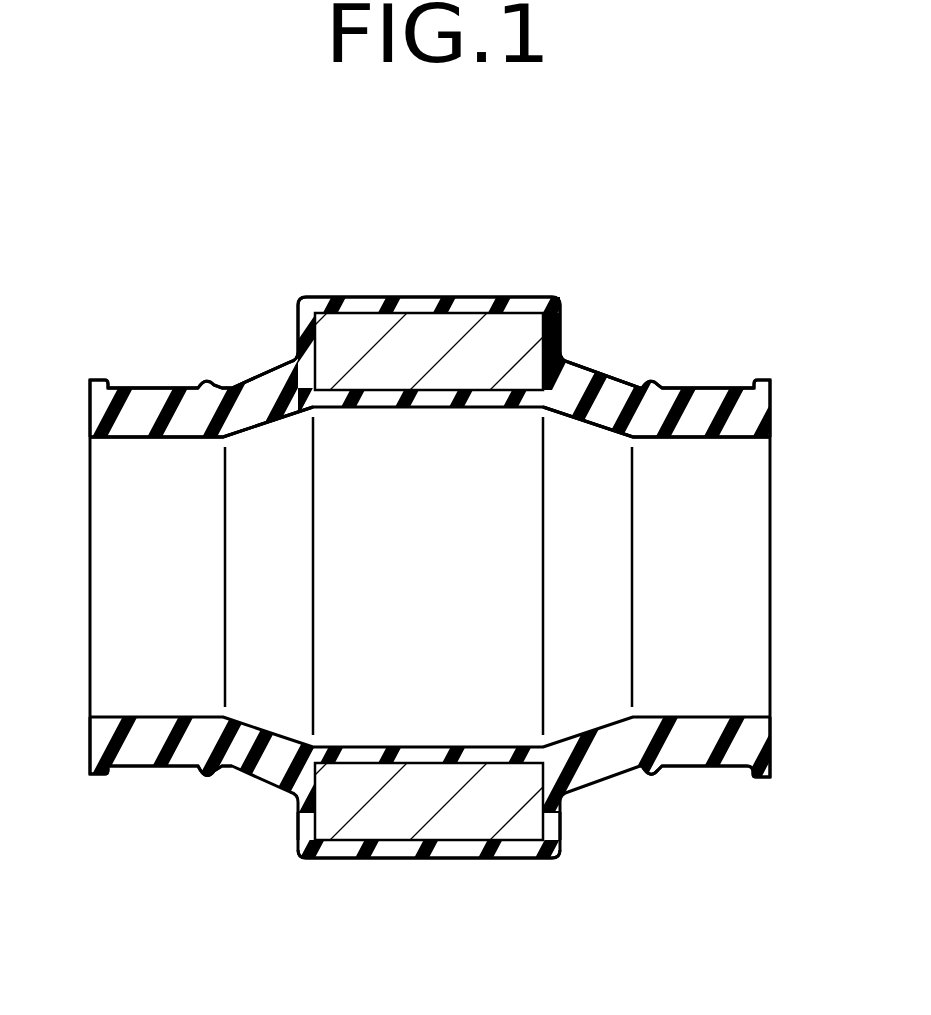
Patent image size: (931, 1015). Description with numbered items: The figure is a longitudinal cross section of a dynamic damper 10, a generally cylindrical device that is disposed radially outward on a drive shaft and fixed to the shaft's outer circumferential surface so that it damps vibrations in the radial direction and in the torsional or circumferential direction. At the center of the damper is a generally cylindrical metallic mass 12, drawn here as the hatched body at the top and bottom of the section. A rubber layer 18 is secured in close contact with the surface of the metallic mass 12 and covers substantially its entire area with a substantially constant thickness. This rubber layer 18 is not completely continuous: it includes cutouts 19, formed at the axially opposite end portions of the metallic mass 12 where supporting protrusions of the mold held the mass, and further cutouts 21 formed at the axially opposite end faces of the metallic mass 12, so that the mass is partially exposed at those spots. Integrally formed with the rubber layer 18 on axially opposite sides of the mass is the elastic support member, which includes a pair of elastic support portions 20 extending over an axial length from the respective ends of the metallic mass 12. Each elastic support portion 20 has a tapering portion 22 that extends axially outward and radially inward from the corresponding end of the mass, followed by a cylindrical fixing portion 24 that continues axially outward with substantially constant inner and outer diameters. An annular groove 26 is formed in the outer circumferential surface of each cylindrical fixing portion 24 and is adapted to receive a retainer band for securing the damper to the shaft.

The dynamic damper 10 is at (752, 261).
The metallic mass 12 is at (338, 327).
The rubber layer 18 is at (498, 294).
The cutouts 19 is at (335, 850).
The elastic support portions 20 is at (270, 290).
The cutouts 21 is at (305, 829).
The tapering portion 22 is at (262, 370).
The cylindrical fixing portion 24 is at (167, 403).
The annular groove 26 is at (162, 765).